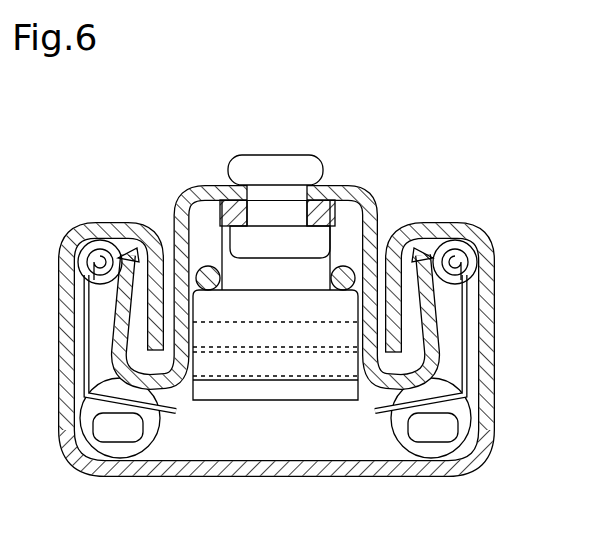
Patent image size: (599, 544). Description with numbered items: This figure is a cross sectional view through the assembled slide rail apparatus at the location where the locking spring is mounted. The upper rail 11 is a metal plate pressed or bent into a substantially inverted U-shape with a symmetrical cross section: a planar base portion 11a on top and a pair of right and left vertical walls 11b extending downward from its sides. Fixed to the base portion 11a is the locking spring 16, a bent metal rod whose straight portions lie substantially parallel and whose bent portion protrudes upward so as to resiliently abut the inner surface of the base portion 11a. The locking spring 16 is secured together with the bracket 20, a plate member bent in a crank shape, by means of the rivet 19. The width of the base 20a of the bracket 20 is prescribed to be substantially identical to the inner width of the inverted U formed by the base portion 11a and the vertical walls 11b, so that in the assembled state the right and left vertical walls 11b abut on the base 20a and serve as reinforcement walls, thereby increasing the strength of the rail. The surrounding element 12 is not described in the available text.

The upper rail 11 is at (330, 185).
The base portion 11a is at (230, 190).
The vertical walls 11b is at (175, 252).
The housing 12 is at (145, 467).
The locking spring 16 is at (205, 266).
The rivet 19 is at (250, 165).
The bracket 20 is at (240, 400).
The base 20a is at (287, 332).